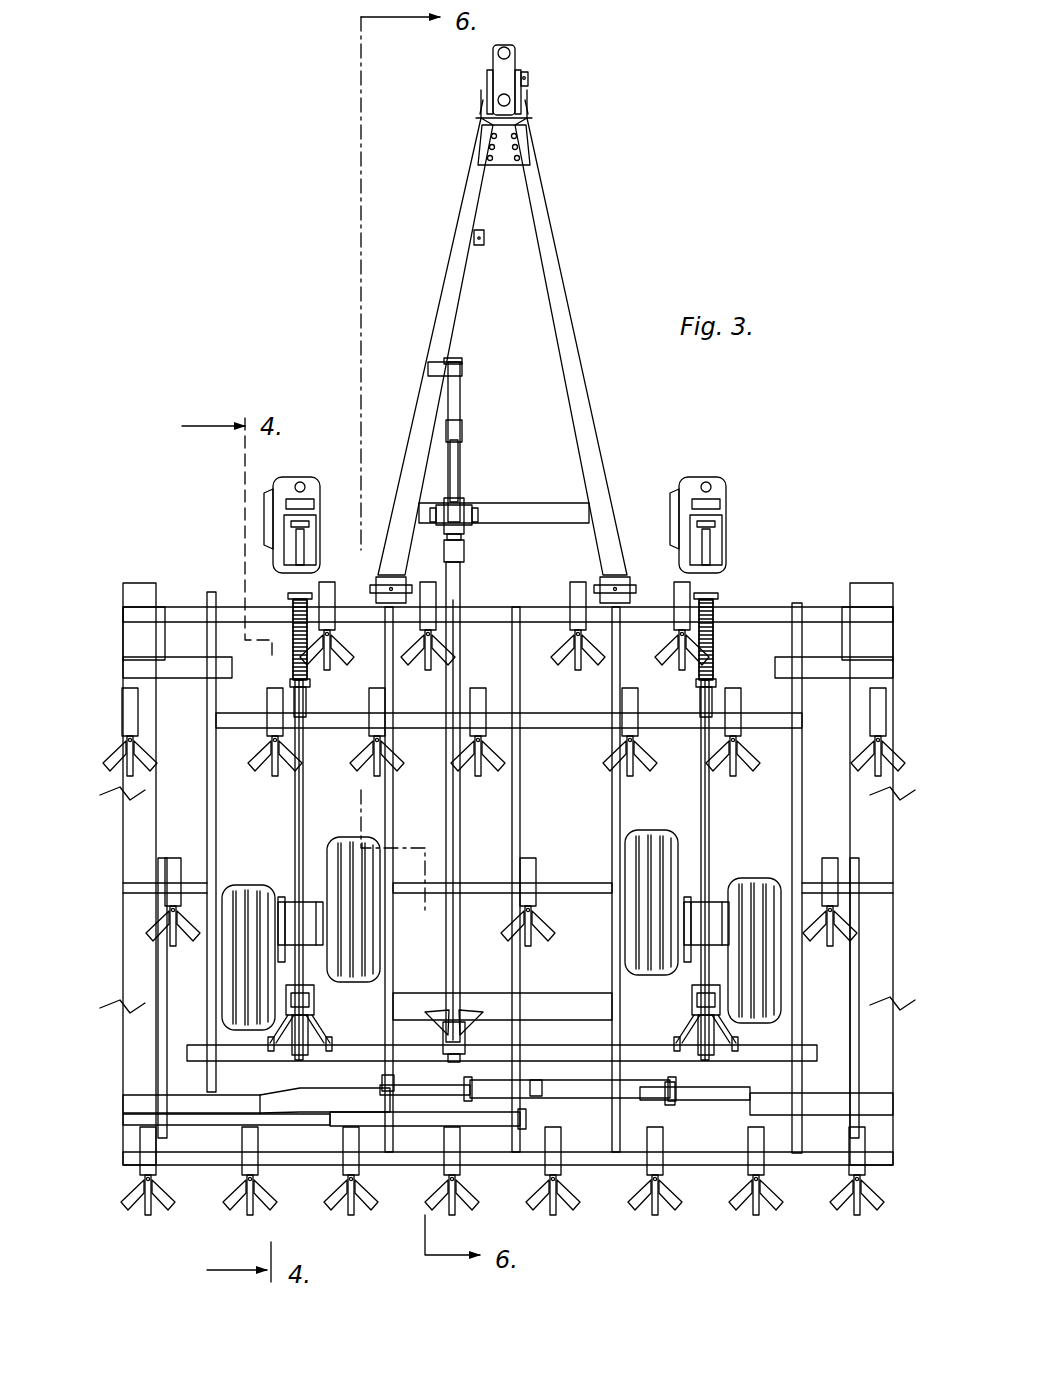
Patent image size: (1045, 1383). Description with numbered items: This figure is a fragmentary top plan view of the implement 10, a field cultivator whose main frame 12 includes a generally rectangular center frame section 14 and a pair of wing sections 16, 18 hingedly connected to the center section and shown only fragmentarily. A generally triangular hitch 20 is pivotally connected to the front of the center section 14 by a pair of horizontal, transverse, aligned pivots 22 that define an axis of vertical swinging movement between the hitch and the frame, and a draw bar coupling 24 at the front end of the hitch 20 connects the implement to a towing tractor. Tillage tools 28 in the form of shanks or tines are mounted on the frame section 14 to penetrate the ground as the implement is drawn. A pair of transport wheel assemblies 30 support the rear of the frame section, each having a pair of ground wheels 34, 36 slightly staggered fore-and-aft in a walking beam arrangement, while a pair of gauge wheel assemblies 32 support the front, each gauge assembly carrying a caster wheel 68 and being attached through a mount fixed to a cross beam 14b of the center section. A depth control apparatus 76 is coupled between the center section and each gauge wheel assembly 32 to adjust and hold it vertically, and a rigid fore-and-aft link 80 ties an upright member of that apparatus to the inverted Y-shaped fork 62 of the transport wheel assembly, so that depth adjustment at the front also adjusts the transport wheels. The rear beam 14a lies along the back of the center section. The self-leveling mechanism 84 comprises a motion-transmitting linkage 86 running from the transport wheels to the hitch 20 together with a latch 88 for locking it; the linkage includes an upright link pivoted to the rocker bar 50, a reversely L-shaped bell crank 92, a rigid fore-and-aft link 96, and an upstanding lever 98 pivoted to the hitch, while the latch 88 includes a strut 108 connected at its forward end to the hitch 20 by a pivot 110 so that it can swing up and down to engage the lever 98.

The implement 10 is at (652, 170).
The main frame 12 is at (750, 578).
The center frame section 14 is at (802, 610).
The rear frame beam 14a is at (262, 1052).
The cross beam 14b is at (757, 610).
The wing section 16 is at (140, 610).
The wing section 18 is at (872, 612).
The hitch 20 is at (574, 280).
The pivots 22 is at (376, 596).
The draw bar coupling 24 is at (515, 65).
The tillage tools 28 is at (495, 752).
The transport wheel assemblies 30 is at (268, 870).
The gauge wheel assemblies 32 is at (313, 468).
The ground wheel 34 is at (236, 888).
The ground wheel 36 is at (336, 840).
The rocker bar 50 is at (553, 1000).
The fork 62 is at (318, 1025).
The caster wheel 68 is at (322, 520).
The depth control apparatus 76 is at (312, 670).
The link 80 is at (305, 775).
The self-leveling mechanism 84 is at (470, 551).
The linkage 86 is at (466, 920).
The latch 88 is at (470, 445).
The bell crank 92 is at (460, 1040).
The link 96 is at (460, 855).
The lever 98 is at (466, 502).
The strut 108 is at (463, 468).
The pivot 110 is at (462, 368).